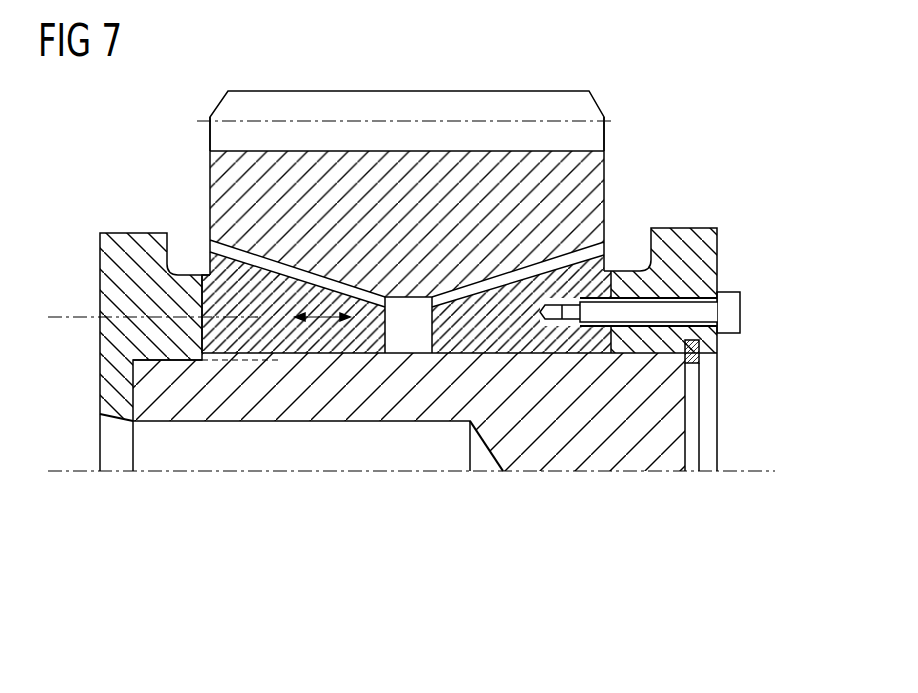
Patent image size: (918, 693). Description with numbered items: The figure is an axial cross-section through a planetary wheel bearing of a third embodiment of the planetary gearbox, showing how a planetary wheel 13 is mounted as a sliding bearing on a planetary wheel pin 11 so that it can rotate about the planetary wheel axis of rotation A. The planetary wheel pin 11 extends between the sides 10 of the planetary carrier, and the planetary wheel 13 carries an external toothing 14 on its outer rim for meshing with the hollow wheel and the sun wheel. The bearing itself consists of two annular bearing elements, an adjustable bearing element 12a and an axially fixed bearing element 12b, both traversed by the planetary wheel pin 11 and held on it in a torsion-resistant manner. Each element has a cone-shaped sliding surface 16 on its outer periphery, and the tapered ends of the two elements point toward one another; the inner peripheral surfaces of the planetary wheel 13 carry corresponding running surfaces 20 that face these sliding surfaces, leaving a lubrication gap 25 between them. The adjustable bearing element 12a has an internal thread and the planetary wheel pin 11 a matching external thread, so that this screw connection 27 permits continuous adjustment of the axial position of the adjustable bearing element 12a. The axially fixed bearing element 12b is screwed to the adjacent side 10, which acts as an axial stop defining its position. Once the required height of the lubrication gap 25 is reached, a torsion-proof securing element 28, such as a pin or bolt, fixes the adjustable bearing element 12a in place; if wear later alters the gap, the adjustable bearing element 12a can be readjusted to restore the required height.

The side 10 is at (125, 232).
The planetary wheel pin 11 is at (623, 440).
The adjustable bearing element 12a is at (352, 338).
The axially fixed bearing element 12b is at (523, 337).
The planetary wheel 13 is at (601, 175).
The external toothing 14 is at (462, 105).
The cone-shaped sliding surface 16 is at (523, 325).
The running surface 20 is at (491, 288).
The lubrication gap 25 is at (309, 270).
The screw connection 27 is at (248, 358).
The torsion-proof securing element 28 is at (62, 317).
The planetary wheel axis of rotation A is at (758, 470).